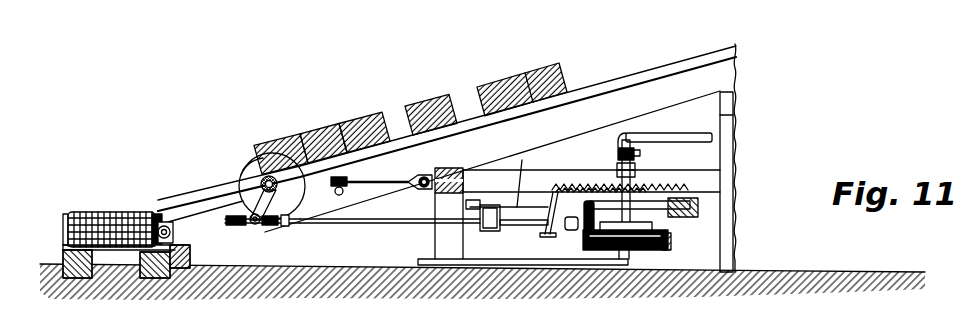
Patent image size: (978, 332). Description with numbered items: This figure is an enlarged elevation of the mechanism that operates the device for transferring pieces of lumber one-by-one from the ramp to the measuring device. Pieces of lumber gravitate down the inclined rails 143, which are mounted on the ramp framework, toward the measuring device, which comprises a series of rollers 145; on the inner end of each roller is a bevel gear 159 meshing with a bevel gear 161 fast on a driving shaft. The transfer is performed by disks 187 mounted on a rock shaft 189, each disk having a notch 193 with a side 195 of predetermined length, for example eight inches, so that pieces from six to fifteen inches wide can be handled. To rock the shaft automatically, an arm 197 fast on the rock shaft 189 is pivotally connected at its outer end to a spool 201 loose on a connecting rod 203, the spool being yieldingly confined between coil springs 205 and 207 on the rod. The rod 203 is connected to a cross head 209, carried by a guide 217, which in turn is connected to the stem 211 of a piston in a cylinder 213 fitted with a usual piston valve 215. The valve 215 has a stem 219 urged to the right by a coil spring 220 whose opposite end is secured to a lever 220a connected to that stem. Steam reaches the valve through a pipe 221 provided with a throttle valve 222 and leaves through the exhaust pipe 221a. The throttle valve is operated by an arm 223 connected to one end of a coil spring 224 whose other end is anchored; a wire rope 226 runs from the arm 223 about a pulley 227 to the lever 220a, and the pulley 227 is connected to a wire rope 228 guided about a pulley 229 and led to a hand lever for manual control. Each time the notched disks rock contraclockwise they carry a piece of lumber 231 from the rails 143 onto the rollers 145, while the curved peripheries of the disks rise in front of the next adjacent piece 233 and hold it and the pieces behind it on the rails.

The inclined rails 143 is at (698, 54).
The rollers 145 is at (108, 212).
The bevel gear 159 is at (158, 214).
The bevel gear 161 is at (174, 233).
The disks 187 is at (246, 172).
The rock shaft 189 is at (261, 184).
The notch 193 is at (258, 153).
The side of notch 195 is at (265, 153).
The arm 197 is at (276, 207).
The spool 201 is at (265, 225).
The connecting rod 203 is at (351, 224).
The coil spring 205 is at (237, 226).
The coil spring 207 is at (278, 225).
The cross head 209 is at (489, 231).
The piston stem 211 is at (528, 226).
The cylinder 213 is at (655, 210).
The piston valve 215 is at (669, 238).
The guide 217 is at (509, 182).
The valve stem 219 is at (567, 231).
The coil spring 220 is at (600, 172).
The lever 220a is at (563, 180).
The pipe 221 is at (672, 133).
The exhaust pipe 221a is at (510, 267).
The throttle valve 222 is at (634, 157).
The arm 223 is at (636, 170).
The coil spring 224 is at (672, 181).
The wire rope 226 is at (618, 153).
The pulley 227 is at (425, 177).
The wire rope 228 is at (374, 171).
The pulley 229 is at (344, 190).
The piece of lumber 231 is at (290, 142).
The next adjacent piece 233 is at (336, 133).